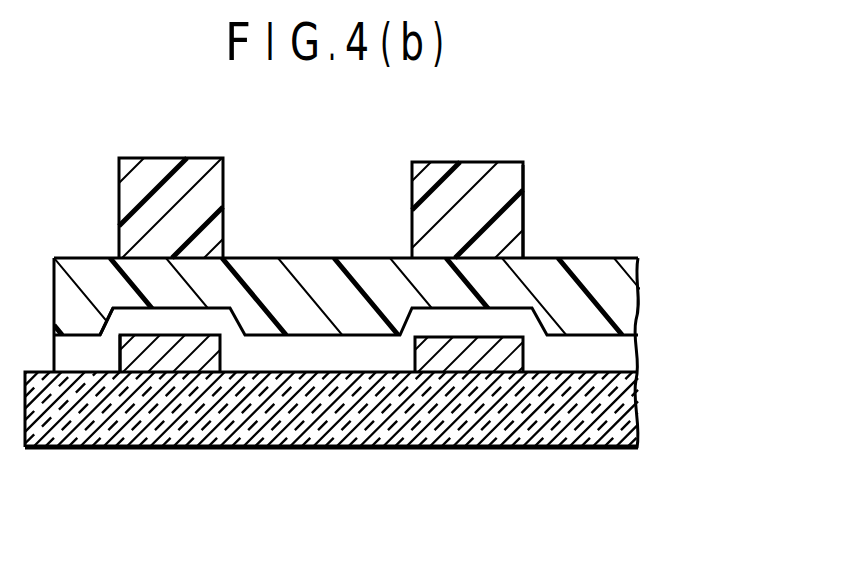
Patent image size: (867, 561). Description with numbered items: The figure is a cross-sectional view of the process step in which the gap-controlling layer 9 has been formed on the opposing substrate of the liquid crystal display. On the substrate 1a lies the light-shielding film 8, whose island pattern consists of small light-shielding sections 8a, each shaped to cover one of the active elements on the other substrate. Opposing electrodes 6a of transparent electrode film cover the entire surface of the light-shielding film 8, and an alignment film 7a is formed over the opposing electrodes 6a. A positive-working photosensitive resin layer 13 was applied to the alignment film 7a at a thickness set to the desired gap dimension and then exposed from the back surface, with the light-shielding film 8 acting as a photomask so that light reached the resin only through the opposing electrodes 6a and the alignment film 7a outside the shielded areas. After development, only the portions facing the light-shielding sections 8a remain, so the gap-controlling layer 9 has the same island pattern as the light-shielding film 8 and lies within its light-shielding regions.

The substrate 1a is at (618, 425).
The opposing electrodes 6a is at (618, 355).
The alignment film 7a is at (618, 297).
The light-shielding film 8 is at (108, 362).
The small light-shielding sections 8a is at (193, 363).
The gap-controlling layer 9 is at (530, 200).
The photosensitive resin layer 13 is at (195, 167).